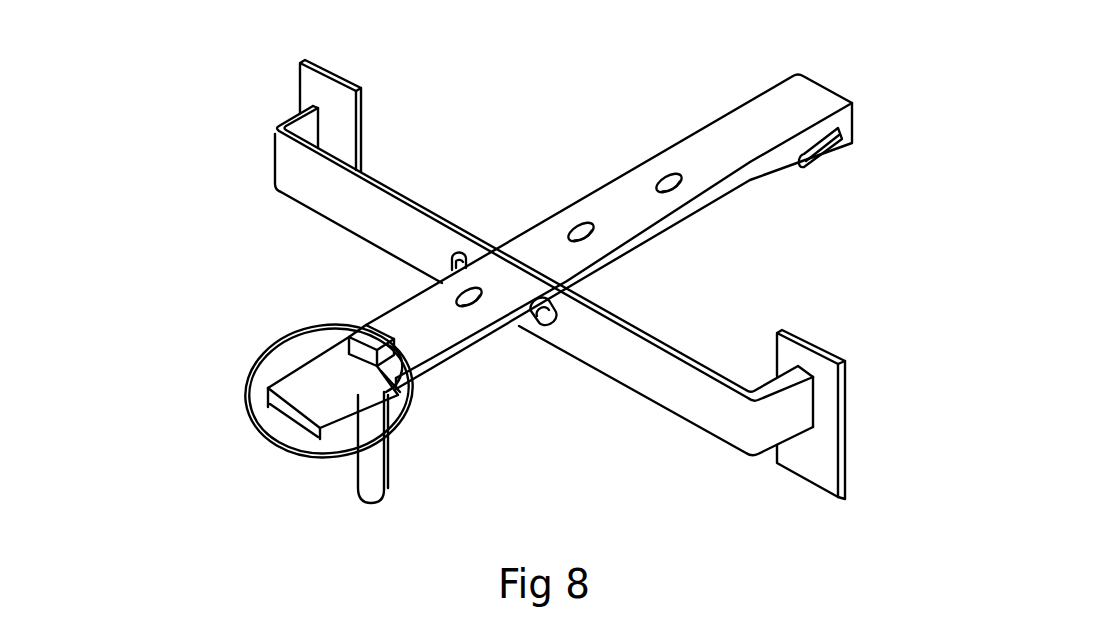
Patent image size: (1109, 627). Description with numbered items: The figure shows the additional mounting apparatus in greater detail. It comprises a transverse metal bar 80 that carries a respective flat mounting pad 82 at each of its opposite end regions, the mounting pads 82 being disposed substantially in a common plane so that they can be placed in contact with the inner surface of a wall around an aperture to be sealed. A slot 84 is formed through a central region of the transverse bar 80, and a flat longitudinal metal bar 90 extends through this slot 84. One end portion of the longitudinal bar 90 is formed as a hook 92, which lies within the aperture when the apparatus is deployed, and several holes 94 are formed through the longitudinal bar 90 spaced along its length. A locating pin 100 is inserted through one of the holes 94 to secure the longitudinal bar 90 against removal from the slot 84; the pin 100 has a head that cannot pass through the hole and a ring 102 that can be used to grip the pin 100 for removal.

The transverse metal bar 80 is at (320, 213).
The flat mounting pad 82 is at (302, 73).
The slot 84 is at (541, 322).
The flat longitudinal metal bar 90 is at (612, 183).
The hook 92 is at (843, 176).
The holes 94 is at (572, 227).
The locating pin 100 is at (358, 492).
The ring 102 is at (247, 402).